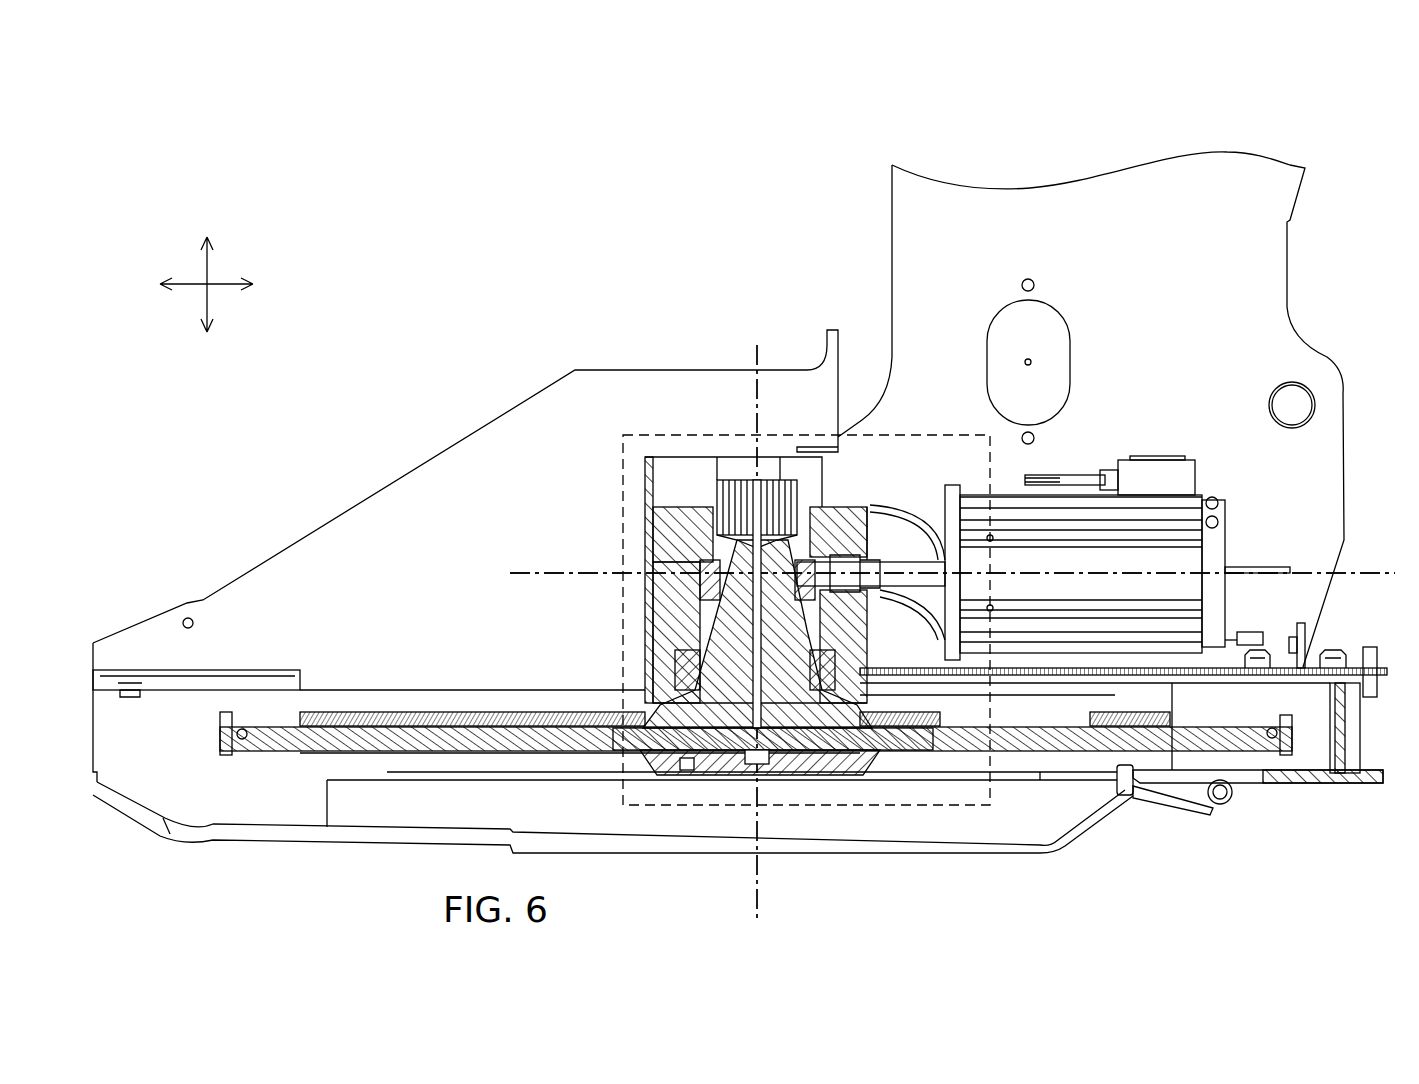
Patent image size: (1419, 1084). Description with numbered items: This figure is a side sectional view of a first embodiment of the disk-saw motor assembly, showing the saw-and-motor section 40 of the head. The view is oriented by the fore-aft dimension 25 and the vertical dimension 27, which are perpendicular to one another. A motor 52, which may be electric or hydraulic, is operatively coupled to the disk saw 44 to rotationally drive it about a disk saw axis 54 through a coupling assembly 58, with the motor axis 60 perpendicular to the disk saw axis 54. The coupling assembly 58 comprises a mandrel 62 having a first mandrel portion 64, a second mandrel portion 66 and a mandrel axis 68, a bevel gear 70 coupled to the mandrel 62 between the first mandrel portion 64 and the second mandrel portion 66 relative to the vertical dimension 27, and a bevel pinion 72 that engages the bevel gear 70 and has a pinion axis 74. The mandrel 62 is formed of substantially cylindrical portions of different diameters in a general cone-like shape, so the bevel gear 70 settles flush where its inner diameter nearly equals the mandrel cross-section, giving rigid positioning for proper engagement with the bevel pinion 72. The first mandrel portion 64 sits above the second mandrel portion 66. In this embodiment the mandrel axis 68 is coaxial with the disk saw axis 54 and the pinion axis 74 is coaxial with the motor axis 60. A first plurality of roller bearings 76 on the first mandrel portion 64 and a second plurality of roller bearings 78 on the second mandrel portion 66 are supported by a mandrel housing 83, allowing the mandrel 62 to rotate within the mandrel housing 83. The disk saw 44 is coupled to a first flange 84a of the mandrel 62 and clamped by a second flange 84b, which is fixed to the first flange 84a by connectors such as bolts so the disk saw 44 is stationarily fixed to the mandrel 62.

The saw-and-motor section 40 is at (1297, 110).
The fore-aft dimension 25 is at (227, 284).
The vertical dimension 27 is at (210, 300).
The disk saw 44 is at (413, 745).
The motor 52 is at (1152, 522).
The disk saw axis 54 is at (760, 897).
The mandrel axis 68 is at (811, 643).
The coupling assembly 58 is at (937, 807).
The motor axis 60 is at (1320, 572).
The pinion axis 74 is at (952, 515).
The mandrel 62 is at (700, 595).
The first mandrel portion 64 is at (655, 527).
The second mandrel portion 66 is at (815, 665).
The bevel gear 70 is at (703, 587).
The bevel pinion 72 is at (897, 567).
The first plurality of roller bearings 76 is at (712, 510).
The second plurality of roller bearings 78 is at (683, 670).
The mandrel housing 83 is at (835, 628).
The first flange 84a is at (673, 715).
The second flange 84b is at (845, 750).